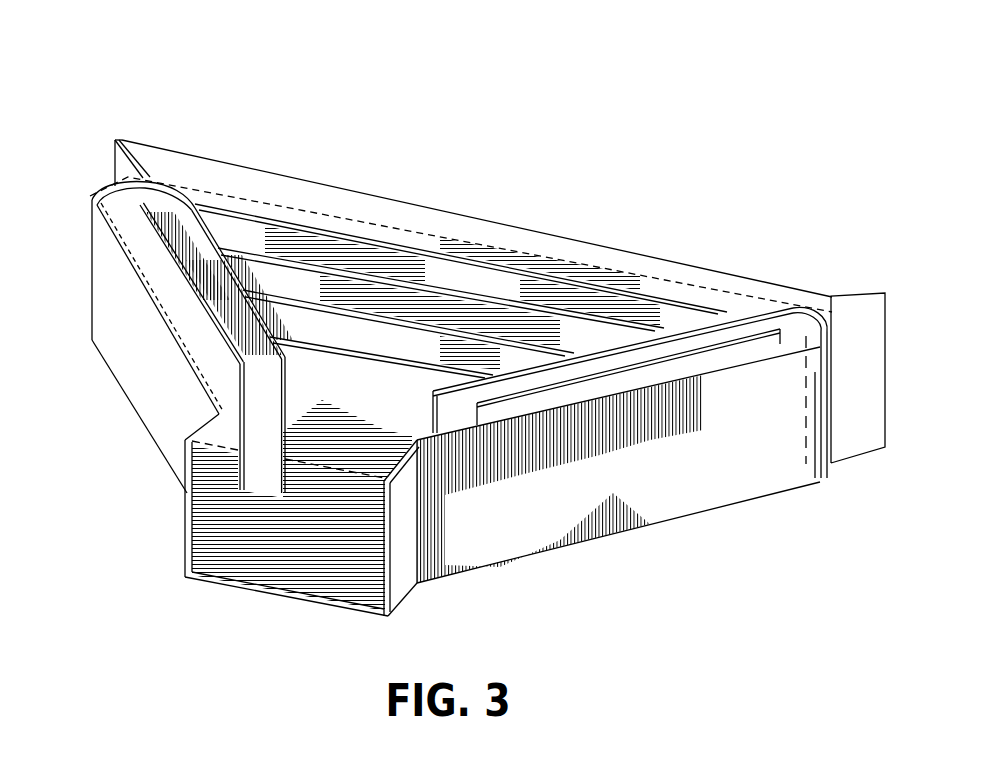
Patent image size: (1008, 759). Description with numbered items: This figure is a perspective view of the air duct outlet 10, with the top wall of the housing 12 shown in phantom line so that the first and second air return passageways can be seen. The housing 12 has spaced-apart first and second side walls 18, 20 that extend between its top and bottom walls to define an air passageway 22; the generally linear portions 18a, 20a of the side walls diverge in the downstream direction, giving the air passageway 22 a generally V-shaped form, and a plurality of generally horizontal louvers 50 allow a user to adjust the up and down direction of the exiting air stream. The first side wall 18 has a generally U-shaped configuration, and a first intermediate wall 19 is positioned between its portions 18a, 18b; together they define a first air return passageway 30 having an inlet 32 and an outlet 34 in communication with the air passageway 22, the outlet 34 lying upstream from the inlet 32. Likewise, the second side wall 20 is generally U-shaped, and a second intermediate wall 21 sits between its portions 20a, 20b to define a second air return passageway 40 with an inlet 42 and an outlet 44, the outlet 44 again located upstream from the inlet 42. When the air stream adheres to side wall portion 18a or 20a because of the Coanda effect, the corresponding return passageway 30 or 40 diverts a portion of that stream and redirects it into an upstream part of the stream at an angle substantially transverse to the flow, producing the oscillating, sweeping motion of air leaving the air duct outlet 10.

The air duct outlet 10 is at (594, 135).
The housing 12 is at (620, 548).
The first side wall 18 is at (748, 303).
The first side wall portion 18a is at (633, 337).
The first side wall portion 18b is at (700, 377).
The first intermediate wall 19 is at (740, 350).
The second side wall 20 is at (179, 183).
The second side wall portion 20a is at (228, 273).
The second side wall portion 20b is at (113, 287).
The second intermediate wall 21 is at (195, 333).
The air passageway 22 is at (307, 552).
The first air return passageway 30 is at (803, 327).
The inlet 32 is at (445, 402).
The outlet 34 is at (492, 412).
The second air return passageway 40 is at (117, 214).
The inlet 42 is at (262, 424).
The outlet 44 is at (230, 424).
The louvers 50 is at (263, 176).